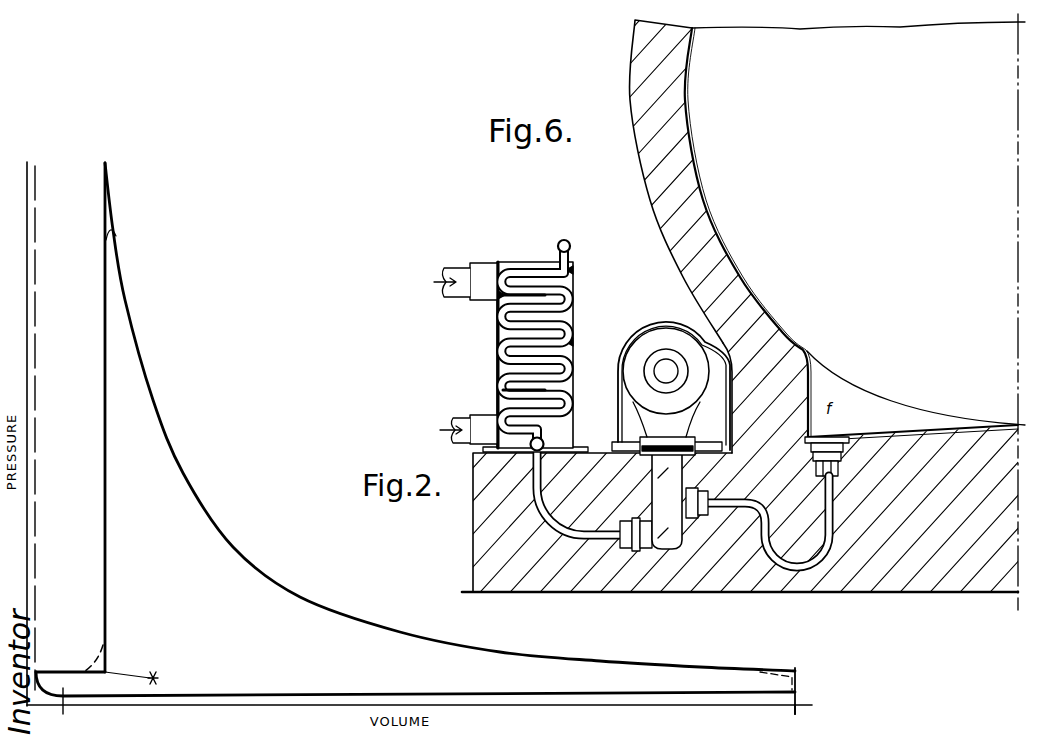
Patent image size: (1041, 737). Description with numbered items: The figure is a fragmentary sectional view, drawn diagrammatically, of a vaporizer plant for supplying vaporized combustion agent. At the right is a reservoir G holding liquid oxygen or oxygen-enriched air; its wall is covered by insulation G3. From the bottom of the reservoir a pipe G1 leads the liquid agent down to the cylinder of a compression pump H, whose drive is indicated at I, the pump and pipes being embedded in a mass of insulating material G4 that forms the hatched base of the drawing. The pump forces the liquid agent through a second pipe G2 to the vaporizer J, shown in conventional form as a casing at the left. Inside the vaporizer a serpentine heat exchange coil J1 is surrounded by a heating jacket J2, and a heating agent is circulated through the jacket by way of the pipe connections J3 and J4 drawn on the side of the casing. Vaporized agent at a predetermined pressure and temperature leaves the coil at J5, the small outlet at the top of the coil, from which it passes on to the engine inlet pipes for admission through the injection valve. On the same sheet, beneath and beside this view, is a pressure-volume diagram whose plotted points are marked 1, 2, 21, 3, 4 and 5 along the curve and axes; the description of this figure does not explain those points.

The reservoir G is at (858, 312).
The pipe G1 is at (883, 440).
The pipe G2 is at (520, 494).
The insulation G3 is at (662, 205).
The insulating material G4 is at (757, 526).
The compression pump H is at (637, 460).
The pump drive I is at (643, 338).
The vaporizer J is at (496, 363).
The heat exchange coil J1 is at (567, 359).
The heating jacket J2 is at (573, 305).
The pipe connection J3 is at (461, 422).
The pipe connection J4 is at (449, 298).
The coil outlet J5 is at (558, 240).
The diagram point 1 is at (69, 660).
The diagram point 2 is at (108, 670).
The diagram point 2 prime 21 is at (107, 165).
The diagram point 3 is at (779, 680).
The diagram point 4 is at (793, 719).
The diagram point 5 is at (415, 703).